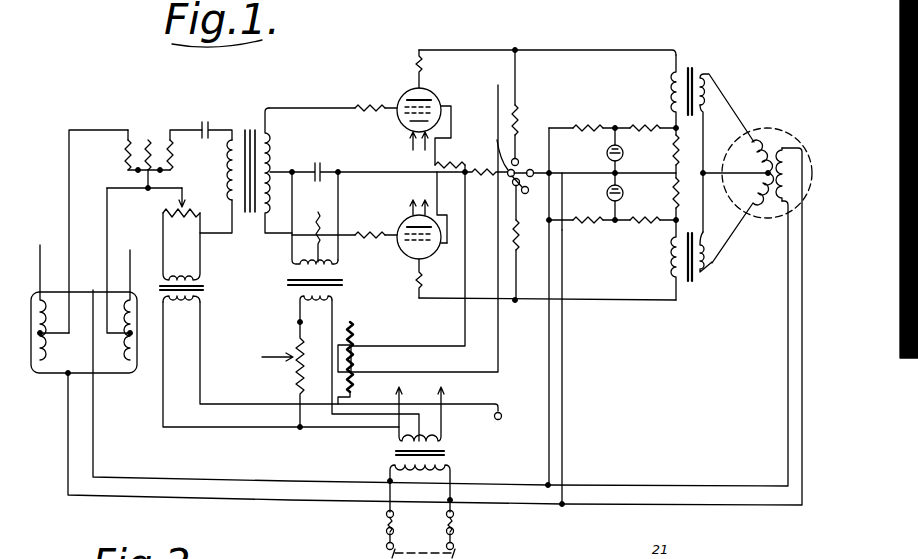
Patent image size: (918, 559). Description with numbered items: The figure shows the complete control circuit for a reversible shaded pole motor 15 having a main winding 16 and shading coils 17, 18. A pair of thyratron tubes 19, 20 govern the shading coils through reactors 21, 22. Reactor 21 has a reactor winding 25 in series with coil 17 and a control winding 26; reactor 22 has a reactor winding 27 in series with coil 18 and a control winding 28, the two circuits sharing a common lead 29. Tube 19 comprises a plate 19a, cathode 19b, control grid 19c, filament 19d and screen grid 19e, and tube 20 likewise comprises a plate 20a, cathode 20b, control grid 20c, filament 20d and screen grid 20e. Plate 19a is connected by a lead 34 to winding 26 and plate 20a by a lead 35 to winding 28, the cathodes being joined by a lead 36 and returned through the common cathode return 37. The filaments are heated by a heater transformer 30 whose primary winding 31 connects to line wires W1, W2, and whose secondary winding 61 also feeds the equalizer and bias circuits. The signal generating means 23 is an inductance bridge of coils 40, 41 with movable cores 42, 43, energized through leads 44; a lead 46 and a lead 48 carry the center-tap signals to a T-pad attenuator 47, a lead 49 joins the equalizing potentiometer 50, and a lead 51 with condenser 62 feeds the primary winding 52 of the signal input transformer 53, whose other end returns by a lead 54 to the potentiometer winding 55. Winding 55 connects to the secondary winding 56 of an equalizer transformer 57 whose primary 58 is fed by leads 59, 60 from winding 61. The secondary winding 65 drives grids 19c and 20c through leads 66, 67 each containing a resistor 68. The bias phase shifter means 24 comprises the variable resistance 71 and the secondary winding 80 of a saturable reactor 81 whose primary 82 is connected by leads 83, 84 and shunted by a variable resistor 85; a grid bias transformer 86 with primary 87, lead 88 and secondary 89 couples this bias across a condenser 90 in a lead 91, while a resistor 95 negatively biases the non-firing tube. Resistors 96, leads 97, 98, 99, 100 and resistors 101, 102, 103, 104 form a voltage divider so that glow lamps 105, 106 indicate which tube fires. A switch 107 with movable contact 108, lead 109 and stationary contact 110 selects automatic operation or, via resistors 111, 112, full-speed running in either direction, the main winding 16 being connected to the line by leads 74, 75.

The reversible shaded pole motor 15 is at (780, 130).
The main winding 16 is at (785, 208).
The shading coil 17 is at (760, 135).
The shading coil 18 is at (755, 214).
The thyratron tube 19 is at (410, 92).
The anode or plate 19a is at (430, 92).
The cathode 19b is at (409, 120).
The control grid 19c is at (405, 105).
The filament 19d is at (411, 143).
The screen grid 19e is at (434, 103).
The thyratron tube 20 is at (412, 258).
The anode or plate 20a is at (424, 262).
The cathode 20b is at (404, 231).
The control grid 20c is at (450, 240).
The filament 20d is at (410, 222).
The screen grid 20e is at (408, 248).
The reactor 21 is at (696, 61).
The reactor 22 is at (694, 295).
The signal generating means 23 is at (64, 261).
The bias phase shifter means 24 is at (266, 356).
The reactor winding 25 is at (704, 84).
The control winding 26 is at (672, 80).
The reactor winding 27 is at (708, 262).
The control winding 28 is at (695, 258).
The common lead 29 is at (712, 168).
The heater transformer 30 is at (448, 456).
The primary winding 31 is at (392, 465).
The lead 34 is at (577, 50).
The lead 35 is at (600, 302).
The lead 36 is at (446, 207).
The common cathode return 37 is at (514, 154).
The coil 40 is at (50, 360).
The coil 41 is at (137, 366).
The movable core 42 is at (50, 343).
The movable core 43 is at (136, 312).
The lead 44 is at (153, 498).
The lead 46 is at (69, 130).
The T-pad attenuator 47 is at (152, 129).
The lead 48 is at (112, 224).
The lead 49 is at (178, 207).
The potentiometer 50 is at (197, 204).
The lead 51 is at (178, 130).
The primary winding 52 is at (226, 160).
The signal input transformer 53 is at (255, 116).
The lead 54 is at (210, 236).
The winding 55 is at (170, 222).
The secondary winding 56 is at (184, 272).
The equalizer transformer 57 is at (211, 296).
The primary winding 58 is at (188, 305).
The lead 59 is at (240, 404).
The lead 60 is at (201, 428).
The secondary winding 61 is at (400, 441).
The condenser 62 is at (207, 121).
The secondary winding 65 is at (280, 144).
The lead 66 is at (290, 108).
The lead 67 is at (314, 227).
The resistor 68 is at (358, 104).
The variable resistance 71 is at (295, 348).
The lead 74 is at (725, 503).
The lead 75 is at (665, 484).
The secondary winding 80 is at (354, 386).
The saturable reactor 81 is at (366, 347).
The primary winding 82 is at (353, 359).
The lead 83 is at (464, 345).
The lead 84 is at (498, 356).
The variable resistor 85 is at (494, 178).
The grid bias transformer 86 is at (283, 292).
The primary winding 87 is at (334, 300).
The lead 88 is at (330, 366).
The secondary winding 89 is at (315, 218).
The condenser 90 is at (318, 162).
The lead 91 is at (342, 185).
The resistor 95 is at (454, 158).
The resistor 96 is at (672, 152).
The lead 97 is at (564, 381).
The lead 98 is at (548, 385).
The lead 99 is at (565, 128).
The lead 100 is at (573, 226).
The resistor 101 is at (596, 125).
The resistor 102 is at (643, 125).
The resistor 103 is at (595, 225).
The resistor 104 is at (645, 226).
The glow lamp 105 is at (606, 157).
The glow lamp 106 is at (606, 193).
The switch 107 is at (530, 154).
The movable contact 108 is at (528, 197).
The lead 109 is at (555, 158).
The stationary contact 110 is at (502, 104).
The resistor 111 is at (530, 110).
The resistor 112 is at (520, 250).
The line wire W1 is at (454, 508).
The line wire W2 is at (386, 510).